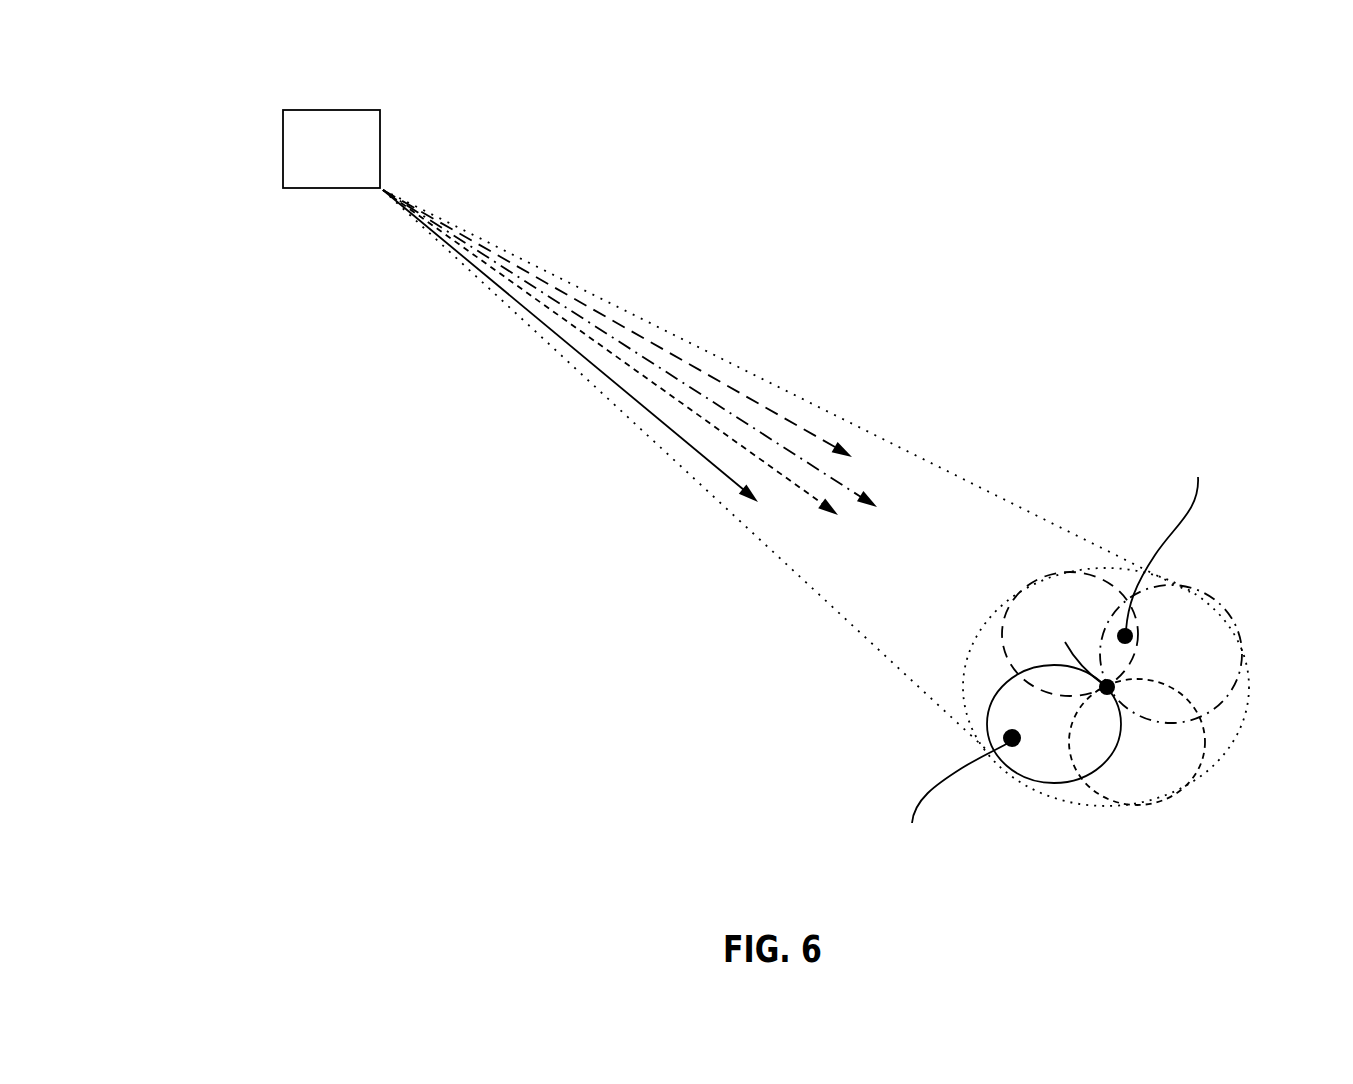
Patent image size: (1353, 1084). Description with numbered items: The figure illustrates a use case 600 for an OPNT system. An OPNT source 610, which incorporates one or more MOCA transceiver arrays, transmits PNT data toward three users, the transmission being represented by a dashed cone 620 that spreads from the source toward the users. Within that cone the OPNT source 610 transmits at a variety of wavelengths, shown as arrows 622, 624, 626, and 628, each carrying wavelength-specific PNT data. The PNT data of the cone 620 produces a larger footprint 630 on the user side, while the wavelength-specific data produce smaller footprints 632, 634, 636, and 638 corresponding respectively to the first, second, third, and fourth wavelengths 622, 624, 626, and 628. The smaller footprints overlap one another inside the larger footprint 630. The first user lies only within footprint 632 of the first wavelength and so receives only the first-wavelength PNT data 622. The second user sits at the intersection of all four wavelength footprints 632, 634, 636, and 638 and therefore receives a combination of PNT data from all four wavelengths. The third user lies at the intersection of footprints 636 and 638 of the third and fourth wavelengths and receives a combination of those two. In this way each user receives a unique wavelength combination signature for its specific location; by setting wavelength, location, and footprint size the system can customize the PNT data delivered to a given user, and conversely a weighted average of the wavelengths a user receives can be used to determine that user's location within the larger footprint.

The use case 600 is at (246, 148).
The OPNT source 610 is at (380, 127).
The dashed cone 620 is at (1004, 494).
The wavelength-specific PNT data arrow 622 is at (597, 369).
The wavelength-specific PNT data arrow 624 is at (725, 435).
The wavelength-specific PNT data arrow 626 is at (714, 402).
The wavelength-specific PNT data arrow 628 is at (822, 440).
The footprint 630 is at (1235, 740).
The footprint 632 is at (988, 713).
The footprint 634 is at (1093, 783).
The footprint 636 is at (1167, 607).
The footprint 638 is at (1093, 582).